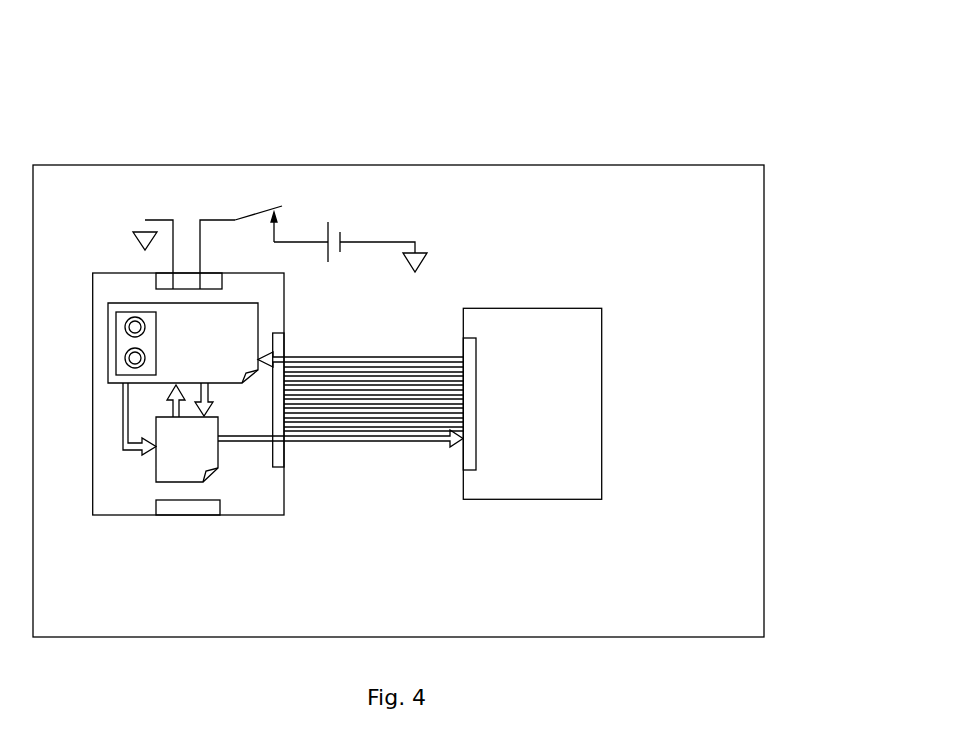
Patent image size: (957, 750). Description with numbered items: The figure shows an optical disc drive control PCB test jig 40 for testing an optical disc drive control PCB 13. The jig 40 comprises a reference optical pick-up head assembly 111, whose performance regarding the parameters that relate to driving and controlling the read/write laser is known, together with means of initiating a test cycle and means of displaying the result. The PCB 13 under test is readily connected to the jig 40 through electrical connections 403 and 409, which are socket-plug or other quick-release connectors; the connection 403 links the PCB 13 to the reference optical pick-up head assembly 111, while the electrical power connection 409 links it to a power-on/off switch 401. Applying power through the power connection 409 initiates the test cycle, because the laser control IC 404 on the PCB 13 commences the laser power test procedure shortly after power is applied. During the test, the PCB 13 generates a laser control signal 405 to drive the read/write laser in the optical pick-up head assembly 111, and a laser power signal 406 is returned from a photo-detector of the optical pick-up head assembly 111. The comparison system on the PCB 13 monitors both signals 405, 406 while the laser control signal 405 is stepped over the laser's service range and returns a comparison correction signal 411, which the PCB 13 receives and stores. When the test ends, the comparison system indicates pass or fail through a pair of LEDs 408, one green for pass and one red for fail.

The optical disc drive control PCB test jig 40 is at (781, 113).
The optical disc drive control PCB 13 is at (285, 502).
The electrical power connection 409 is at (217, 271).
The power-on/off switch 401 is at (260, 213).
The pair of LEDs 408 is at (135, 312).
The laser control signal 405 is at (168, 395).
The comparison correction signal 411 is at (212, 395).
The laser power signal 406 is at (122, 428).
The laser control IC 404 is at (218, 460).
The electrical connection 403 is at (407, 430).
The reference optical pick-up head assembly 111 is at (599, 423).